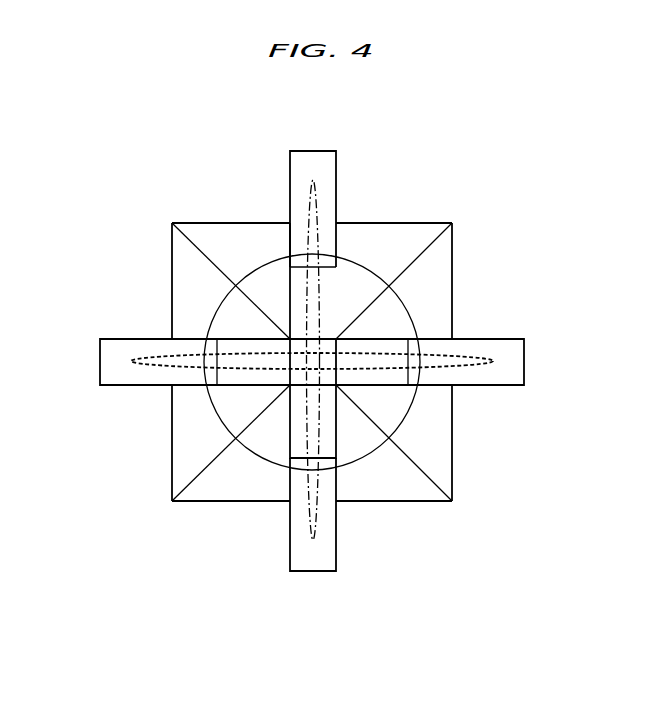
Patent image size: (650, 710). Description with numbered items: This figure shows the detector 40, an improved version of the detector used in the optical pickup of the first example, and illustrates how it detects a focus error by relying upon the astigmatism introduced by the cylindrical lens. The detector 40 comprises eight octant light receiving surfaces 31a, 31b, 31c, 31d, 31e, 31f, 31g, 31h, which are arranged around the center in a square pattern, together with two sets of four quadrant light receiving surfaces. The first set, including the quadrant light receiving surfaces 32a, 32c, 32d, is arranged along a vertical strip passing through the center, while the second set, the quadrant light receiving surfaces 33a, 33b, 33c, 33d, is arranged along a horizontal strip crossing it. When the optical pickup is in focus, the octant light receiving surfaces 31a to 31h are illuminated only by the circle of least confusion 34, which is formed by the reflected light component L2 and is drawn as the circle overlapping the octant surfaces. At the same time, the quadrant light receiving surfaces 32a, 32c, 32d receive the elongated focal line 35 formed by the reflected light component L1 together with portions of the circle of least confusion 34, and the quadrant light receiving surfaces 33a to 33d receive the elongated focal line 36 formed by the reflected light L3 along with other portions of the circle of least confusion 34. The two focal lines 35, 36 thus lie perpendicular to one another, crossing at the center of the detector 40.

The detector 40 is at (473, 200).
The octant light receiving surface 31a is at (396, 223).
The octant light receiving surface 31b is at (453, 263).
The octant light receiving surface 31c is at (453, 484).
The octant light receiving surface 31d is at (425, 501).
The octant light receiving surface 31e is at (197, 501).
The octant light receiving surface 31f is at (172, 428).
The octant light receiving surface 31g is at (172, 233).
The octant light receiving surface 31h is at (205, 223).
The quadrant light receiving surface 32a is at (309, 151).
The quadrant light receiving surface 32c is at (290, 436).
The quadrant light receiving surface 32d is at (317, 571).
The quadrant light receiving surface 33a is at (524, 340).
The quadrant light receiving surface 33b is at (385, 339).
The quadrant light receiving surface 33c is at (204, 353).
The quadrant light receiving surface 33d is at (100, 339).
The circle of least confusion 34 is at (410, 414).
The focal line 35 is at (317, 532).
The focal line 36 is at (478, 367).